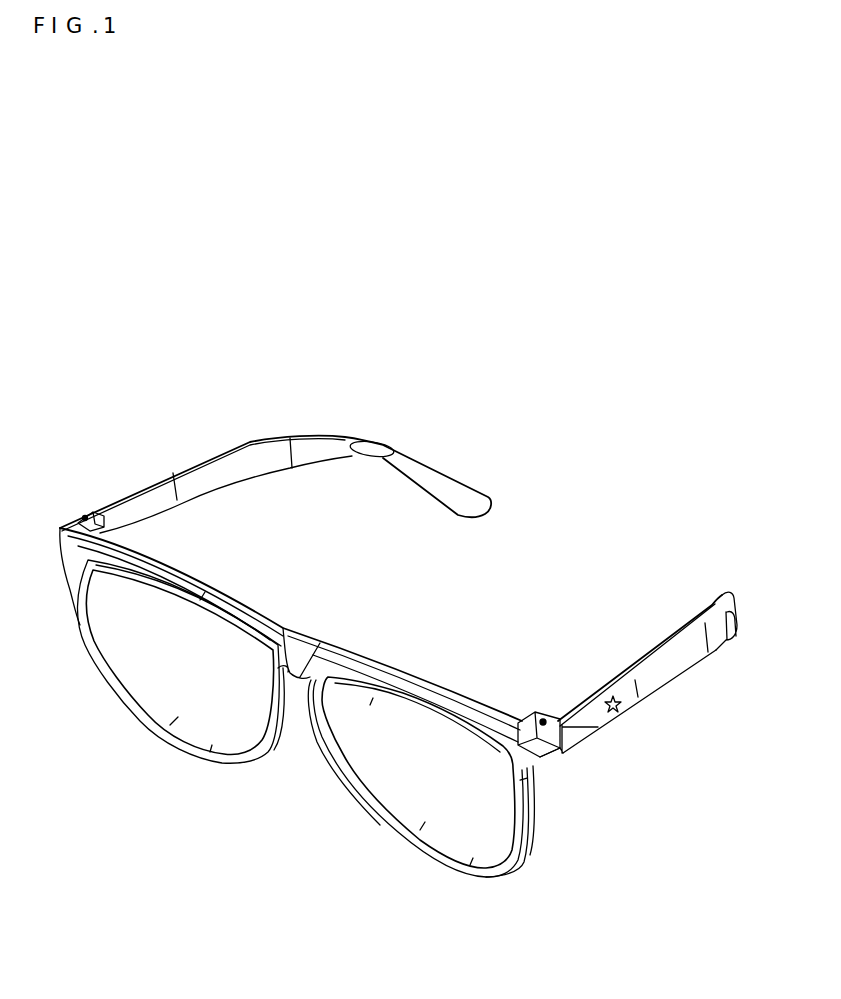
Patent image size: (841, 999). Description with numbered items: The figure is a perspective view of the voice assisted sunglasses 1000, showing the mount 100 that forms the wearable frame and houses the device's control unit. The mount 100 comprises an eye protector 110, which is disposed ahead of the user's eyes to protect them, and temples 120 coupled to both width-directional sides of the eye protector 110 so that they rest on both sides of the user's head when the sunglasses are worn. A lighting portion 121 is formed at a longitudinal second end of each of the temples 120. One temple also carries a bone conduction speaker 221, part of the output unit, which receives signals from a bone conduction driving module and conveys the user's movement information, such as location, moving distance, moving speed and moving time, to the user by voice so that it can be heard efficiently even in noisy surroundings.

The voice assisted sunglasses 1000 is at (607, 384).
The mount 100 is at (608, 555).
The eye protector 110 is at (497, 701).
The temple 120 is at (613, 685).
The lighting portion 121 is at (620, 710).
The bone conduction speaker 221 is at (373, 449).